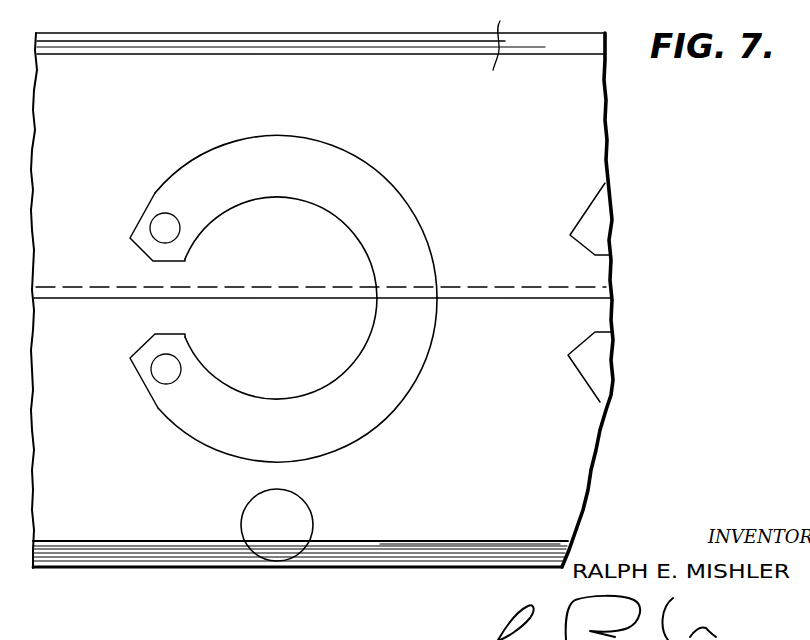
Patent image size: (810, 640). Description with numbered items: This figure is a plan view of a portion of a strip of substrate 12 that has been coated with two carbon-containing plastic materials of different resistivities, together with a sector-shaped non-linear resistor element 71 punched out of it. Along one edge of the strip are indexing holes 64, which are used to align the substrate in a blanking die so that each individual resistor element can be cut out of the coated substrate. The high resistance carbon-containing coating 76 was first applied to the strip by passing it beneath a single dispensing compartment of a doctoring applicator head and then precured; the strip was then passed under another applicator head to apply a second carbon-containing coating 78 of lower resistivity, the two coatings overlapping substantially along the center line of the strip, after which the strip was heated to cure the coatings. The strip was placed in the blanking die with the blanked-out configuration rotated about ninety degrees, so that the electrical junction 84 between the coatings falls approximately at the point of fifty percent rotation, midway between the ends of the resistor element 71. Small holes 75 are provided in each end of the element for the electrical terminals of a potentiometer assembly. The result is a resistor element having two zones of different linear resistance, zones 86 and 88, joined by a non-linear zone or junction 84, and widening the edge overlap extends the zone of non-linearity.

The substrate 12 is at (353, 550).
The indexing holes 64 is at (275, 548).
The resistor element 71 is at (370, 279).
The holes 75 is at (165, 230).
The high resistance carbon-containing coating 76 is at (438, 513).
The second carbon-containing coating 78 is at (503, 35).
The electrical junction 84 is at (492, 291).
The zone 86 is at (420, 244).
The zone 88 is at (391, 397).